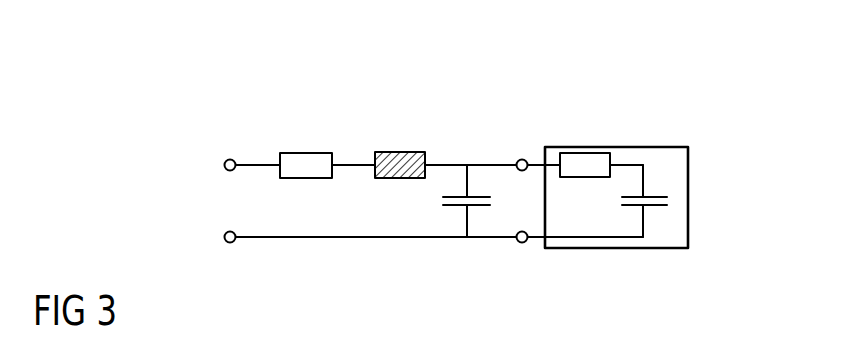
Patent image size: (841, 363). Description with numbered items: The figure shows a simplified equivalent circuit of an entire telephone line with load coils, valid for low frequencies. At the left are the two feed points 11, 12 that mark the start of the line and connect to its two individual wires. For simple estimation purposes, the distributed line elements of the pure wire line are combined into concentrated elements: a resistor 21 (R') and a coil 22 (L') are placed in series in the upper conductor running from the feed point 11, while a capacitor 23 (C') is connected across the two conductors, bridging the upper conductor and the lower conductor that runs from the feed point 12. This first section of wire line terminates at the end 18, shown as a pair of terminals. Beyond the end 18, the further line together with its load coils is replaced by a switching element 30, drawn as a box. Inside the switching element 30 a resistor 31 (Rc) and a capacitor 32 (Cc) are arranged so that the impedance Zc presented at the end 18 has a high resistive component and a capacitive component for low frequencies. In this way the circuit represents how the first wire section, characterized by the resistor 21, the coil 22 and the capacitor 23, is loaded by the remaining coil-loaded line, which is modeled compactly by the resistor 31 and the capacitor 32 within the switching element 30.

The feed point 11 is at (223, 162).
The feed point 12 is at (223, 235).
The end of first line section 18 is at (525, 158).
The resistor 21 is at (308, 153).
The coil 22 is at (400, 152).
The capacitor 23 is at (455, 206).
The switching element 30 is at (663, 147).
The resistor 31 is at (585, 153).
The capacitor 32 is at (663, 190).